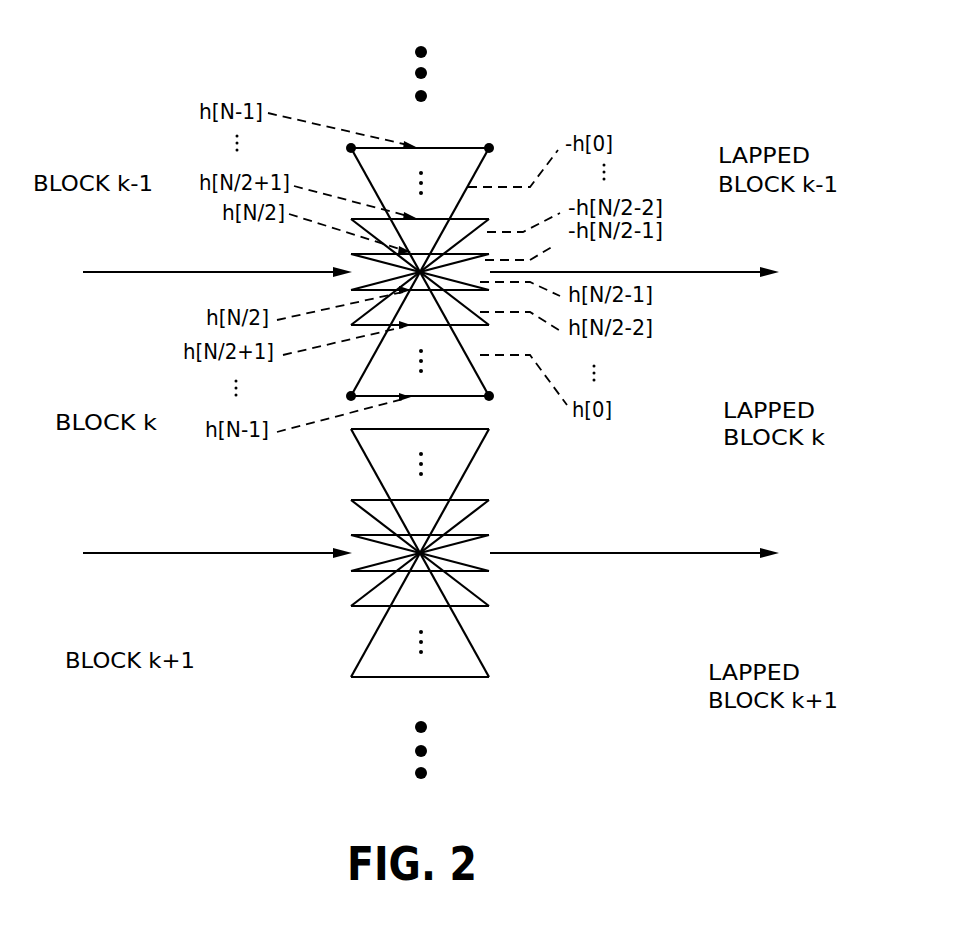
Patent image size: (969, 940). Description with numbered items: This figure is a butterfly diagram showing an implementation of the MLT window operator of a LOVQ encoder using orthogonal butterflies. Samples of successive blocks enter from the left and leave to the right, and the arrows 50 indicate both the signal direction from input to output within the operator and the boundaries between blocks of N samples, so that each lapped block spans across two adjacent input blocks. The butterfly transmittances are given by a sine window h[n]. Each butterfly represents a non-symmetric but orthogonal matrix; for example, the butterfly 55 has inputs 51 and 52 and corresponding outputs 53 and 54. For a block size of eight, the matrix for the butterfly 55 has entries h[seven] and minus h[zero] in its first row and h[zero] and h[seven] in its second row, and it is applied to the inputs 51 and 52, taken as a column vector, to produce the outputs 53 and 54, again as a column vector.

The arrows 50 is at (103, 273).
The input 51 is at (351, 148).
The input 52 is at (351, 395).
The output 53 is at (489, 148).
The output 54 is at (489, 396).
The butterfly 55 is at (455, 148).